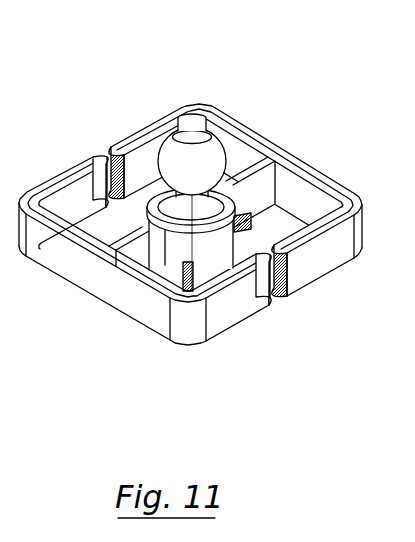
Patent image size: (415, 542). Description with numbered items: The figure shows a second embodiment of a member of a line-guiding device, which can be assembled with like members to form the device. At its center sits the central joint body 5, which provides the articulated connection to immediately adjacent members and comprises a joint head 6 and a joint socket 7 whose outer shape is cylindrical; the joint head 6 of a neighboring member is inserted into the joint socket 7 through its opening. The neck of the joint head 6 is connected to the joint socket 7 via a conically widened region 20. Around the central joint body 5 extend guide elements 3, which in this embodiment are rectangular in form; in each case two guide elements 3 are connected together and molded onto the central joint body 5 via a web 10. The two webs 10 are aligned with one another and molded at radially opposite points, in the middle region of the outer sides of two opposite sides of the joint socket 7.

The guide element 3 is at (64, 185).
The central joint body 5 is at (272, 214).
The joint head 6 is at (172, 147).
The joint socket 7 is at (182, 254).
The web 10 is at (254, 176).
The conically widened region 20 is at (245, 230).